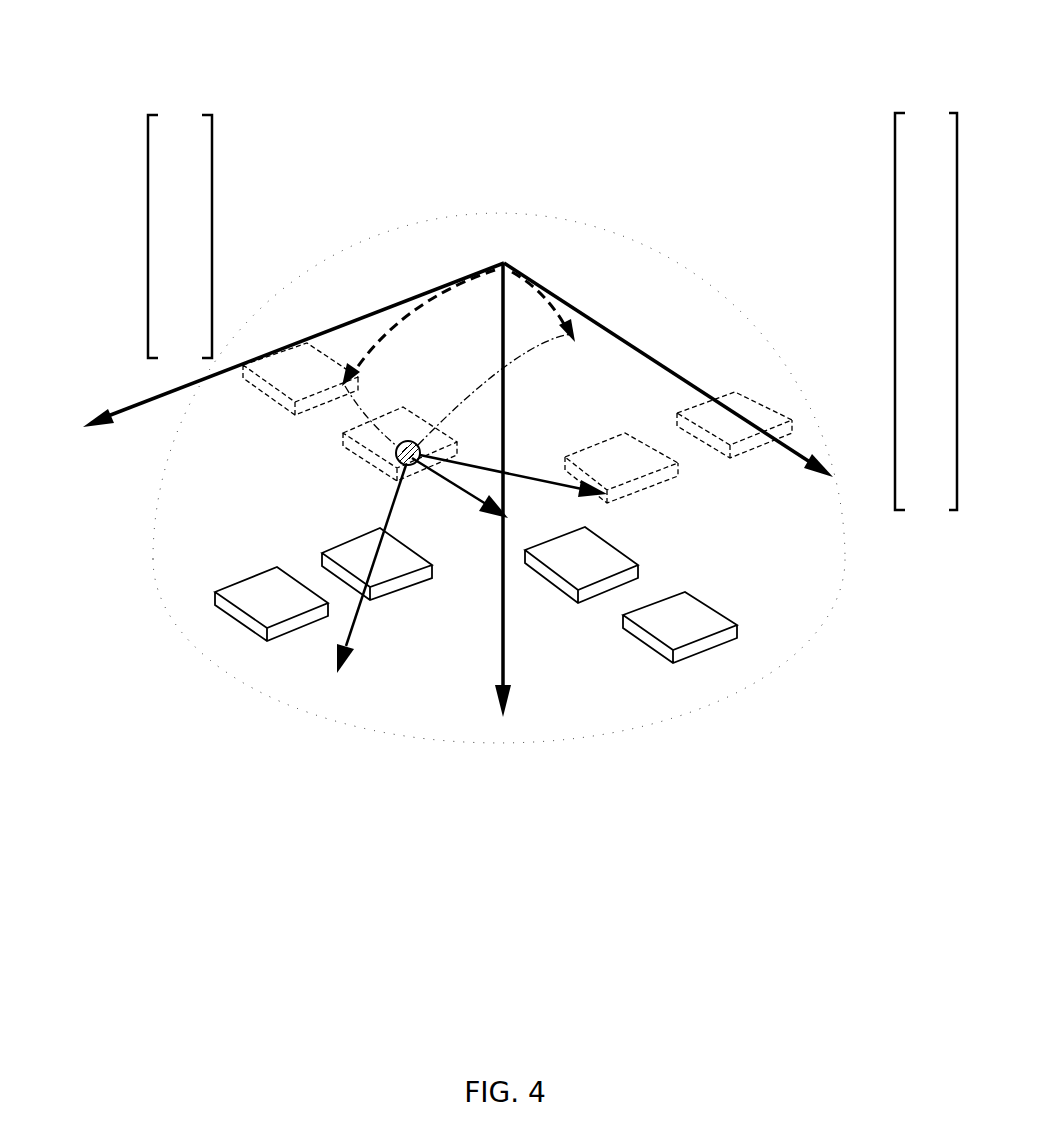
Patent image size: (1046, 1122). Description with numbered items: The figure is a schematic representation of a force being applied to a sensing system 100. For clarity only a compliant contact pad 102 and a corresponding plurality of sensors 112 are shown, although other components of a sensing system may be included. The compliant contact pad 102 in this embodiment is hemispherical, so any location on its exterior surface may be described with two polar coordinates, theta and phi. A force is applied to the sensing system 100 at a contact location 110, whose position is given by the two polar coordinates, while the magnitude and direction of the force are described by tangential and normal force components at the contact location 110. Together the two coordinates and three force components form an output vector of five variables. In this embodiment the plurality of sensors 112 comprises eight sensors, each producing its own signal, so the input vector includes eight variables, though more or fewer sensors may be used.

The sensing system 100 is at (398, 125).
The compliant contact pad 102 is at (664, 282).
The contact location 110 is at (396, 451).
The plurality of sensors 112 is at (687, 635).